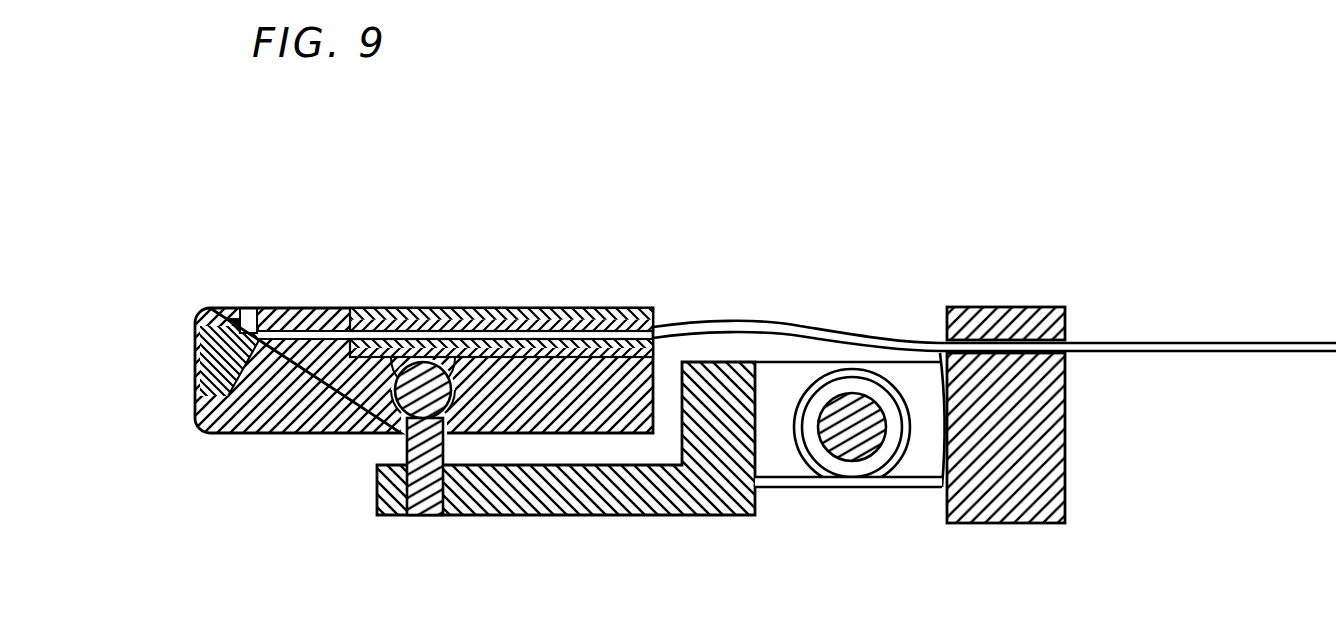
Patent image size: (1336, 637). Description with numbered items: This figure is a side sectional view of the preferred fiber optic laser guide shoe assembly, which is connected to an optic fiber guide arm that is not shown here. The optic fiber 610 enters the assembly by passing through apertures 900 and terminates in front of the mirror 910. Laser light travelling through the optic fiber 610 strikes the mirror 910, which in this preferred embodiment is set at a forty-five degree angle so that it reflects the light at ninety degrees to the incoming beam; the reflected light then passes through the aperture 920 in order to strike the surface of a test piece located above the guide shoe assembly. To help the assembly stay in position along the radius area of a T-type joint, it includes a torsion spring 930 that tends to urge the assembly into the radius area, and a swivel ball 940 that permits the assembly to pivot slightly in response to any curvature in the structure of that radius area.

The optic fiber 610 is at (1142, 344).
The apertures 900 is at (938, 348).
The mirror 910 is at (195, 382).
The aperture 920 is at (242, 310).
The torsion spring 930 is at (786, 487).
The swivel ball 940 is at (403, 445).